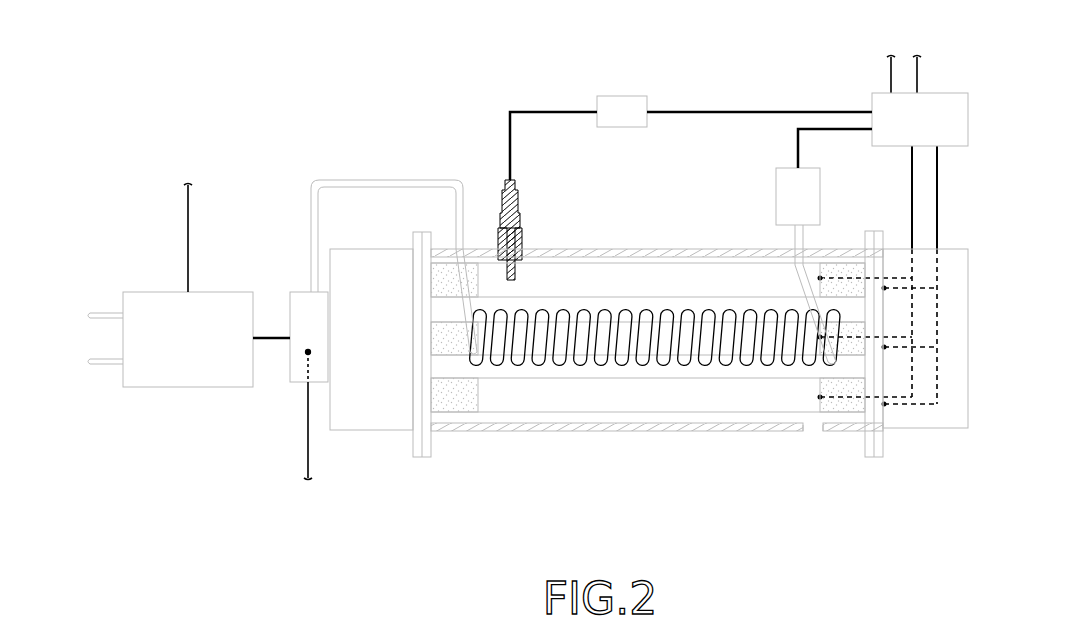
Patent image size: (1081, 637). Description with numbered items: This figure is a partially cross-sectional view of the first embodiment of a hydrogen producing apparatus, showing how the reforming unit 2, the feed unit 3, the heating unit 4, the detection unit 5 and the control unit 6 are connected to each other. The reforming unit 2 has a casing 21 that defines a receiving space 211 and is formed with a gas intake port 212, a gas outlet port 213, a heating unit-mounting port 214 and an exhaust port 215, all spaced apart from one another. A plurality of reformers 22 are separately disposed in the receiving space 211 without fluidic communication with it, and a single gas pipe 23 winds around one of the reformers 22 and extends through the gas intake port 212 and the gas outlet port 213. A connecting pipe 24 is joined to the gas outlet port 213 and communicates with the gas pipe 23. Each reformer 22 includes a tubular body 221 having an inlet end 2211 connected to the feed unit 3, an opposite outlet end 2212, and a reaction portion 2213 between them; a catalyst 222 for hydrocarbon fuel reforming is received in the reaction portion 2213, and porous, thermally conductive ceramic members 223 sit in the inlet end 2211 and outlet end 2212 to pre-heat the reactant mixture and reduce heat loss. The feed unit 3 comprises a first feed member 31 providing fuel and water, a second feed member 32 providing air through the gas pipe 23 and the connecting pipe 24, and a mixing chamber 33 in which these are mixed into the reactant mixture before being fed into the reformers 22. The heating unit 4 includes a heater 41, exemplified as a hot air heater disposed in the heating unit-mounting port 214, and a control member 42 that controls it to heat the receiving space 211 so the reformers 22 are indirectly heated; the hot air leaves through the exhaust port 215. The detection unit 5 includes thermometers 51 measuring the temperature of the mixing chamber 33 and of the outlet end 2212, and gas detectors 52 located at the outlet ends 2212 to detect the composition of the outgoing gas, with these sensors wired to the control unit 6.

The reforming unit 2 is at (639, 320).
The casing 21 is at (645, 249).
The receiving space 211 is at (493, 431).
The gas intake port 212 is at (793, 248).
The gas outlet port 213 is at (465, 248).
The heating unit-mounting port 214 is at (522, 252).
The exhaust port 215 is at (808, 431).
The reformer 22 is at (640, 331).
The tubular body 221 is at (672, 357).
The catalyst 222 is at (593, 400).
The ceramic member 223 is at (445, 403).
The inlet end 2211 is at (431, 393).
The outlet end 2212 is at (848, 285).
The reaction portion 2213 is at (618, 406).
The gas pipe 23 is at (728, 363).
The connecting pipe 24 is at (342, 180).
The feed unit 3 is at (207, 279).
The first feed member 31 is at (165, 288).
The second feed member 32 is at (785, 167).
The mixing chamber 33 is at (352, 438).
The heating unit 4 is at (685, 140).
The heater 41 is at (517, 200).
The control member 42 is at (610, 96).
The detection unit 5 is at (990, 210).
The thermometer 51 is at (306, 452).
The gas detector 52 is at (918, 403).
The control unit 6 is at (950, 92).